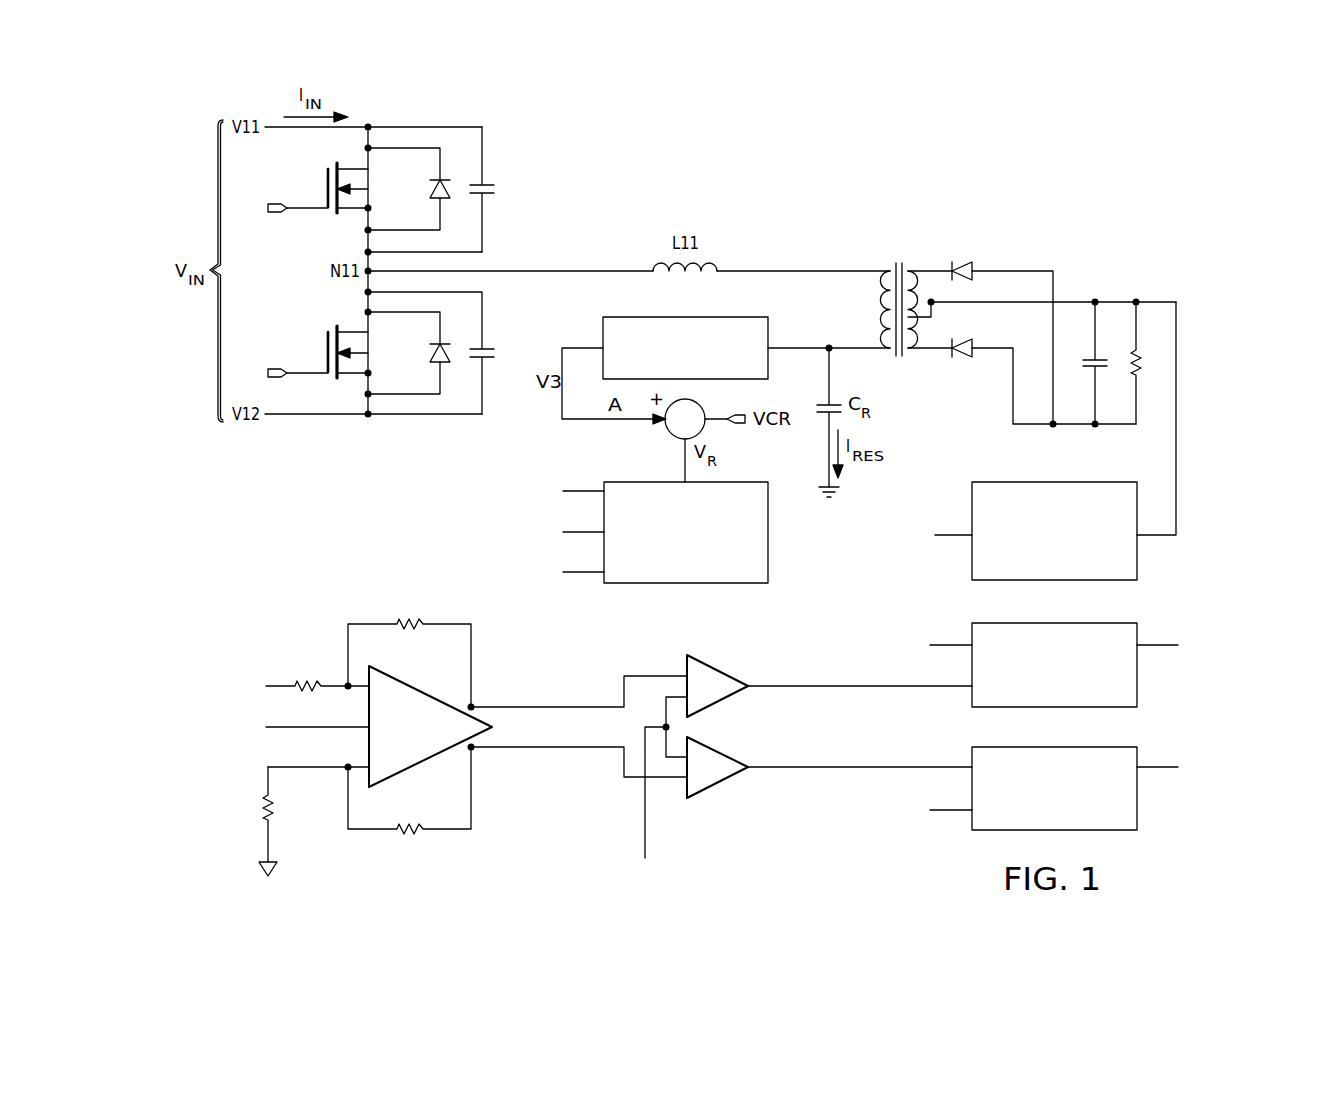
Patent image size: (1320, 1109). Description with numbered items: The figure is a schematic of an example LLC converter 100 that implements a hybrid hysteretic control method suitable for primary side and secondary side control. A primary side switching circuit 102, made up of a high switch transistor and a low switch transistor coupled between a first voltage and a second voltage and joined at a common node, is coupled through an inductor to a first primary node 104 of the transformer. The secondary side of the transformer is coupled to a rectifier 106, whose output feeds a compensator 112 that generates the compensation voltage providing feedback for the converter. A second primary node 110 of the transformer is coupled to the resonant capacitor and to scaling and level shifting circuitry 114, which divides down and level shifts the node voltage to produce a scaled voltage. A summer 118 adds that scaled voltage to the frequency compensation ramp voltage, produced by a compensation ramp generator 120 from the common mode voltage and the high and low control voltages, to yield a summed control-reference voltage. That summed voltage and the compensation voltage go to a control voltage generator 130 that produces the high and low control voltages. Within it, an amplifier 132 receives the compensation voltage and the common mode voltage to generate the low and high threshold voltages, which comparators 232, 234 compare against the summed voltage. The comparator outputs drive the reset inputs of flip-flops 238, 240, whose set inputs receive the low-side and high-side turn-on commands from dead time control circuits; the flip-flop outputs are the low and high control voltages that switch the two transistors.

The LLC converter 100 is at (1088, 150).
The primary side switching circuit 102 is at (580, 181).
The first primary node 104 is at (876, 271).
The rectifier 106 is at (1160, 272).
The second primary node 110 is at (874, 350).
The compensator 112 is at (1076, 563).
The scaling and level shifting circuitry 114 is at (603, 326).
The summer 118 is at (670, 436).
The compensation ramp generator 120 is at (666, 583).
The control voltage generator 130 is at (1248, 729).
The amplifier 132 is at (415, 768).
The comparator 232 is at (718, 670).
The comparator 234 is at (718, 782).
The flip-flop 238 is at (1076, 681).
The flip-flop 240 is at (1076, 803).